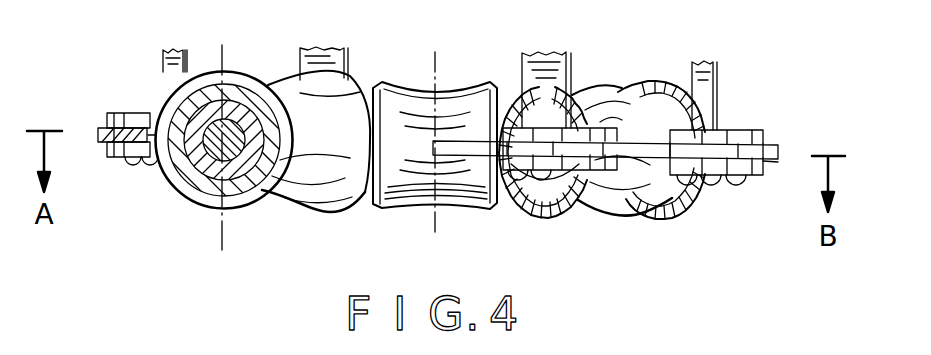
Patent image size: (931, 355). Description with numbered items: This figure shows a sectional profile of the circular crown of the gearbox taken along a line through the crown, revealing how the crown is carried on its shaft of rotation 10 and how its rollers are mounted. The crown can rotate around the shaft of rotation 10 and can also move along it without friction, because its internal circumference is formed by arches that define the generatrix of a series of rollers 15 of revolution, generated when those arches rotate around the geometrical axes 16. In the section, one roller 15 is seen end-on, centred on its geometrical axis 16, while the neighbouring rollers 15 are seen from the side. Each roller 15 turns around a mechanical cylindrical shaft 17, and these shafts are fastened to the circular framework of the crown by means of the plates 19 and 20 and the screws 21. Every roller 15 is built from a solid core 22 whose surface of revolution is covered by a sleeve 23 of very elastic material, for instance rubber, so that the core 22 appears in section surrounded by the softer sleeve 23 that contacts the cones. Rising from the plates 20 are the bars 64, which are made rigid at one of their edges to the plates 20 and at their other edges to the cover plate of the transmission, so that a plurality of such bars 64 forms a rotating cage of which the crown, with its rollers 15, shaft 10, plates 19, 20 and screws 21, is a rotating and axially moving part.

The shaft of rotation 10 is at (436, 215).
The rollers 15 is at (326, 190).
The geometrical axes 16 is at (222, 60).
The mechanical cylindrical shafts 17 is at (231, 112).
The plates 19 is at (112, 157).
The plates 20 is at (130, 113).
The screws 21 is at (133, 165).
The solid core 22 is at (255, 120).
The sleeve 23 is at (257, 178).
The bars 64 is at (700, 63).